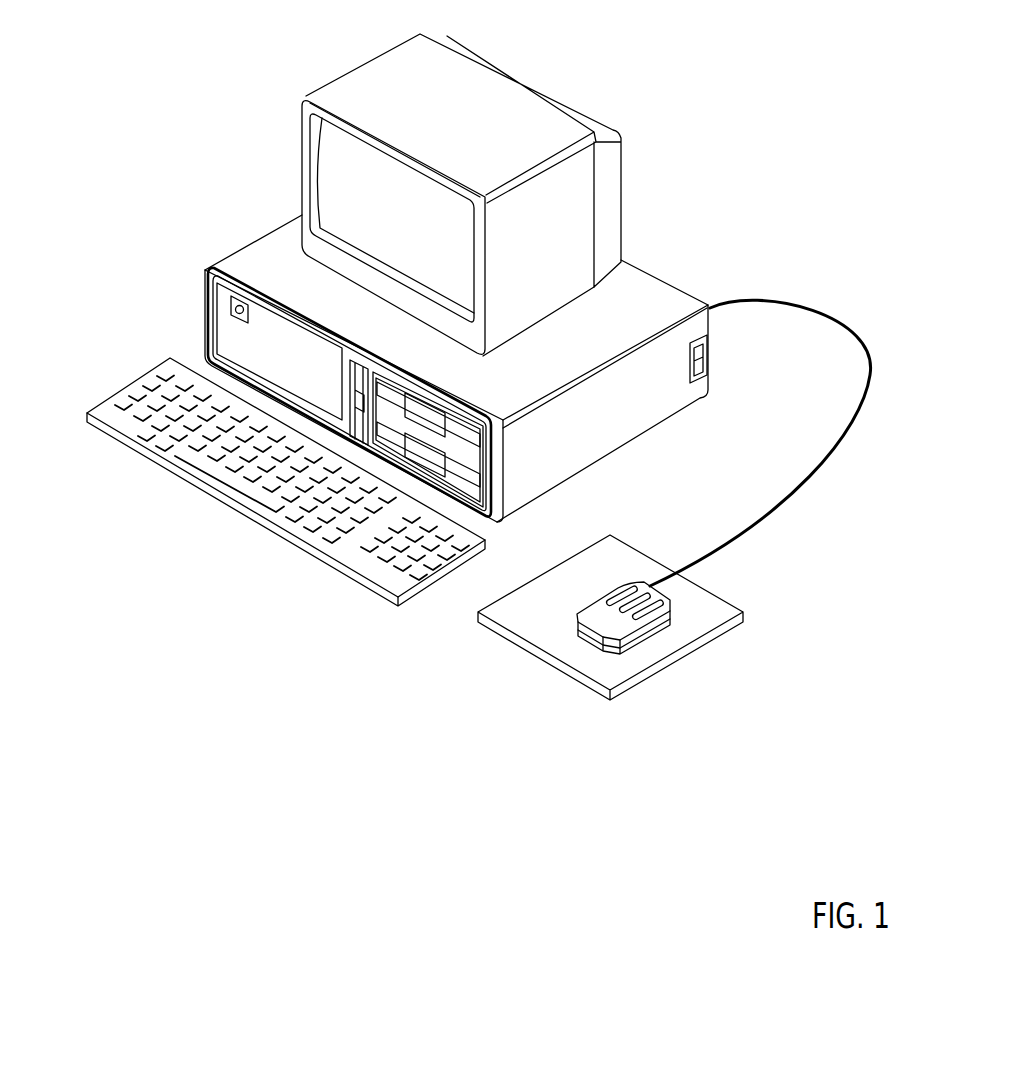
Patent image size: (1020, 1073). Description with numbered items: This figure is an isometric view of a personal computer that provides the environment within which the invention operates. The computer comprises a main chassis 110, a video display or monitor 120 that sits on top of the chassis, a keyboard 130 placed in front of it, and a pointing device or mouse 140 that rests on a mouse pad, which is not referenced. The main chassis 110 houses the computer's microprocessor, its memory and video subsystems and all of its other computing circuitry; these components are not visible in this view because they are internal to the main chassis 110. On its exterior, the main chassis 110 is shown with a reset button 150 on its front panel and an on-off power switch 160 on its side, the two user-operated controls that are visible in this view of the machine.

The main chassis 110 is at (660, 277).
The video display or monitor 120 is at (510, 88).
The keyboard 130 is at (92, 408).
The pointing device or mouse 140 is at (652, 612).
The reset button 150 is at (229, 296).
The on-off power switch 160 is at (707, 343).